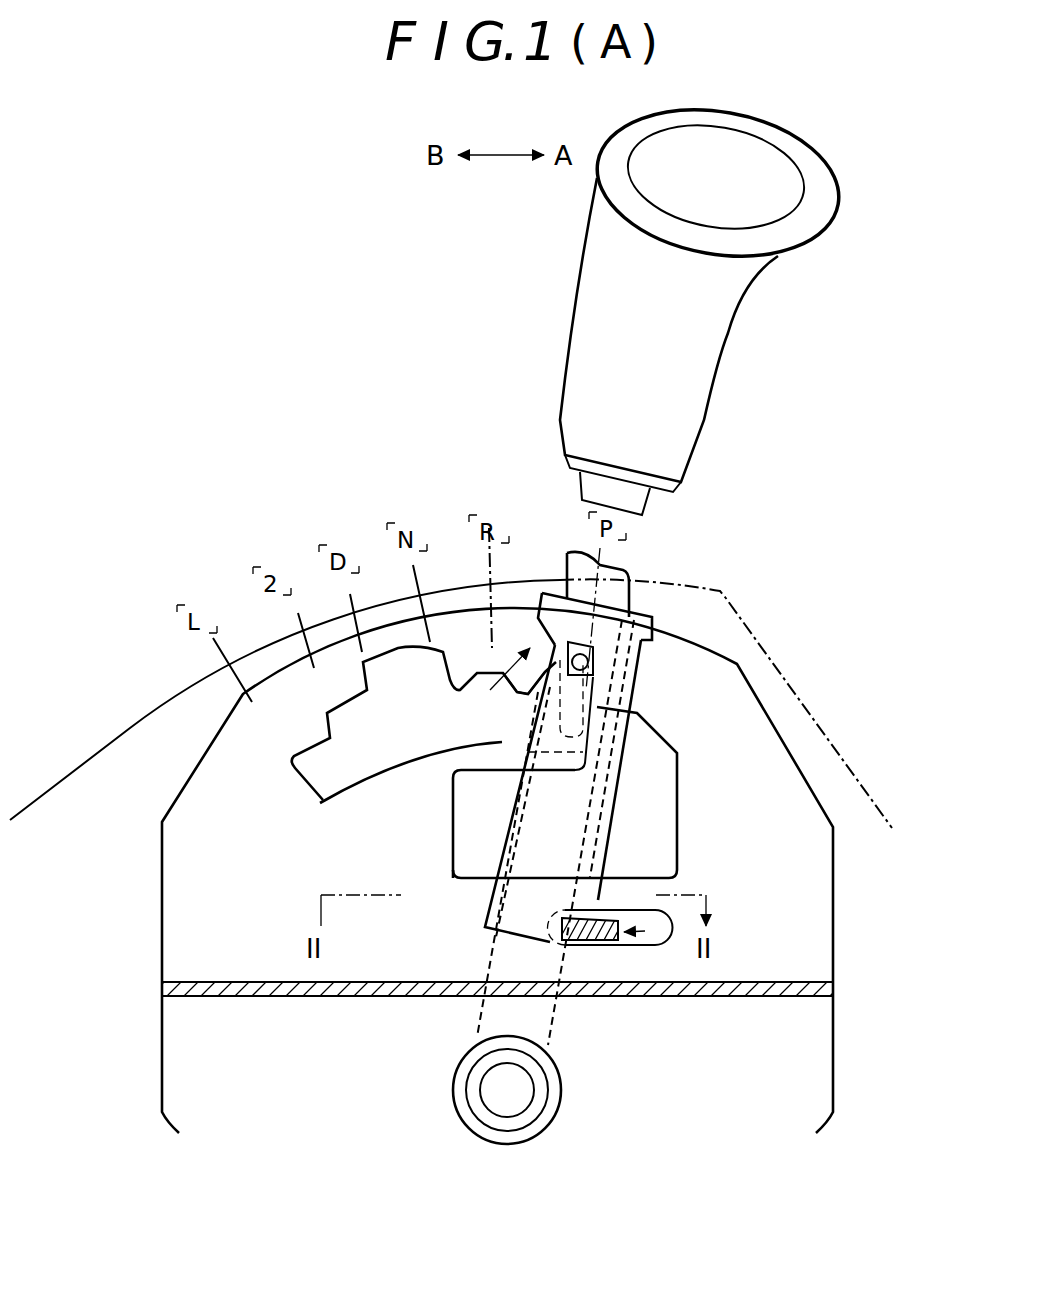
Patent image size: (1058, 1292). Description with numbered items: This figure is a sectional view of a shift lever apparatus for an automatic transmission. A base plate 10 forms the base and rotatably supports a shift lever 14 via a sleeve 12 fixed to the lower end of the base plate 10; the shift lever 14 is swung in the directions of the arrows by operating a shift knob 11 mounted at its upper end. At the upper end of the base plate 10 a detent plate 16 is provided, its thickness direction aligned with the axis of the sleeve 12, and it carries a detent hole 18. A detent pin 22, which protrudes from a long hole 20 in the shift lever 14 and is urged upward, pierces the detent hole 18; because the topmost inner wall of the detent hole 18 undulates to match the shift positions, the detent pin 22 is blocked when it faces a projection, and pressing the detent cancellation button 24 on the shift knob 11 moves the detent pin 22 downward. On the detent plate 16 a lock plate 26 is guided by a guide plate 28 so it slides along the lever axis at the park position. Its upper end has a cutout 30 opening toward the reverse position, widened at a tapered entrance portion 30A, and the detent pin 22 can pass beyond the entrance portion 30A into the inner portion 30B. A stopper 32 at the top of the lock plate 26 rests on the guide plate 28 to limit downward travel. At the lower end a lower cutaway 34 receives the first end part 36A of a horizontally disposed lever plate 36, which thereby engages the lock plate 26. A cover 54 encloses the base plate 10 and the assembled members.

The base plate 10 is at (162, 1011).
The shift knob 11 is at (724, 303).
The sleeve 12 is at (563, 1084).
The shift lever 14 is at (629, 761).
The detent plate 16 is at (162, 886).
The detent hole 18 is at (294, 770).
The long hole 20 is at (587, 706).
The detent pin 22 is at (588, 668).
The detent cancellation button 24 is at (781, 152).
The lock plate 26 is at (548, 717).
The guide plate 28 is at (680, 835).
The cutout 30 is at (545, 655).
The entrance portion 30A is at (538, 632).
The inner portion 30B is at (538, 672).
The stopper 32 is at (653, 580).
The lower cutaway 34 is at (585, 947).
The lever plate 36 is at (661, 989).
The first end part 36A is at (610, 945).
The cover 54 is at (118, 726).